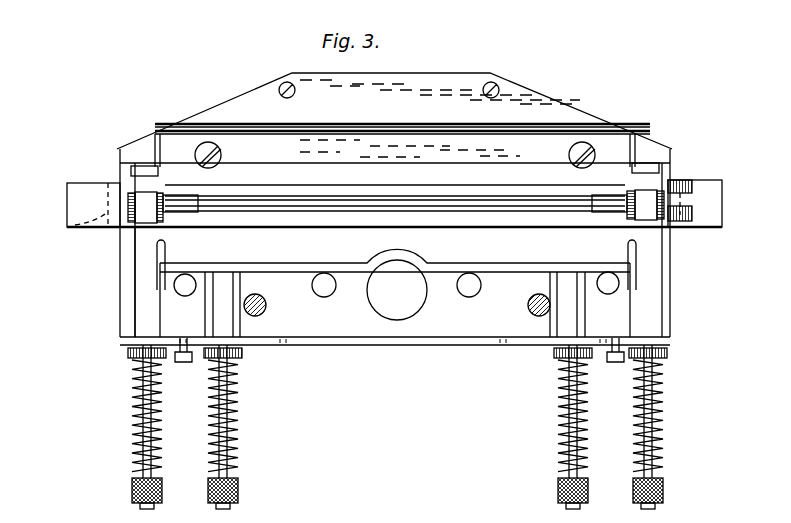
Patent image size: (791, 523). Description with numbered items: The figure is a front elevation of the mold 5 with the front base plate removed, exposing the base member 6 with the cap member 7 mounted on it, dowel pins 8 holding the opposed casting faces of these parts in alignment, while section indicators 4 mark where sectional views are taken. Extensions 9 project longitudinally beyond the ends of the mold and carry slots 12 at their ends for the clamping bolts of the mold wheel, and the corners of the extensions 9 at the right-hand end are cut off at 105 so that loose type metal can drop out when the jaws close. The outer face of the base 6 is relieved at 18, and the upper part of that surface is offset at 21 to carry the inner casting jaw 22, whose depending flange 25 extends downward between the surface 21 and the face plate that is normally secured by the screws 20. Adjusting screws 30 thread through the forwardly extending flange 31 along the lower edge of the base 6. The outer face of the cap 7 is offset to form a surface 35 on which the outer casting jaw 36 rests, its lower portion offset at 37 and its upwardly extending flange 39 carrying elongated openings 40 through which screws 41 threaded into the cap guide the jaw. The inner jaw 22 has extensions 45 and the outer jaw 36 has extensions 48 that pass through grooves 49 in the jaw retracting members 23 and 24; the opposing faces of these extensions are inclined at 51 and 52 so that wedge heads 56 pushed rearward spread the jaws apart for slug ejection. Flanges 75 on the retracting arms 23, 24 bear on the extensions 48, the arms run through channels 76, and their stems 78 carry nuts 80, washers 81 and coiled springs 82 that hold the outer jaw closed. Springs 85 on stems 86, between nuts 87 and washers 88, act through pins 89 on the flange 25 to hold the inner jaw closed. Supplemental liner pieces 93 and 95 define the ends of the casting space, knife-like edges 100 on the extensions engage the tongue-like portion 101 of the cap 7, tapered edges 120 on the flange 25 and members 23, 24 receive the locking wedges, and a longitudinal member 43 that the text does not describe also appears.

The section line 4- 4 is at (592, 82).
The mold 5 is at (142, 120).
The base member 6 is at (118, 303).
The cap member 7 is at (240, 106).
The dowel pins 8 is at (385, 225).
The extensions 9 is at (72, 198).
The slots 12 is at (76, 229).
The recessed surface 18 is at (322, 337).
The screws 20 is at (266, 305).
The offset surface 21 is at (282, 270).
The inner casting jaw 22 is at (351, 218).
The jaw retracting member 23 is at (140, 323).
The jaw retracting member 24 is at (658, 315).
The depending flange 25 is at (421, 240).
The adjusting screws 30 is at (184, 363).
The forwardly extending flange 31 is at (424, 341).
The offset surface 35 is at (183, 124).
The outer casting jaw 36 is at (418, 138).
The offset lower portion 37 is at (312, 168).
The upwardly extending flange 39 is at (346, 134).
The elongated openings 40 is at (221, 166).
The screws 41 is at (222, 150).
The slide rod 43 is at (395, 203).
The extensions 45 is at (147, 232).
The extensions 48 is at (133, 186).
The grooves 49 is at (142, 170).
The tapered surface 51 is at (162, 225).
The tapered surface 52 is at (152, 192).
The wedge heads 56 is at (143, 205).
The flanges 75 is at (150, 166).
The channels 76 is at (132, 288).
The projecting stems 78 is at (138, 381).
The nuts 80 is at (131, 488).
The washer 81 is at (128, 352).
The coiled springs 82 is at (133, 407).
The springs 85 is at (242, 406).
The stems 86 is at (242, 428).
The nuts 87 is at (240, 492).
The washers 88 is at (243, 357).
The pins 89 is at (233, 312).
The supplemental liner pieces 93 is at (200, 199).
The supplemental liner pieces 95 is at (188, 200).
The knife-like edges 100 is at (128, 226).
The tongue-like portion 101 is at (106, 229).
The cut-off corners 105 is at (703, 190).
The tapered edges 120 is at (168, 256).